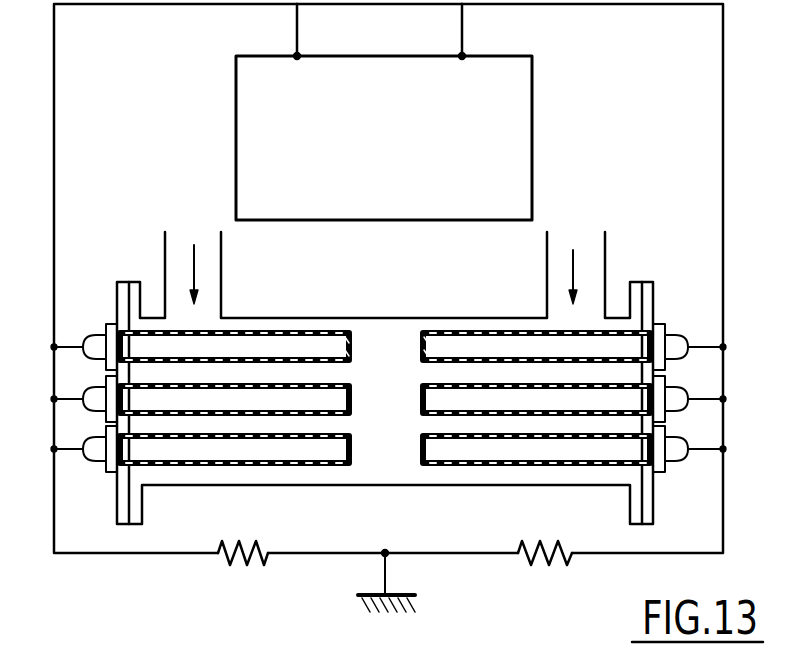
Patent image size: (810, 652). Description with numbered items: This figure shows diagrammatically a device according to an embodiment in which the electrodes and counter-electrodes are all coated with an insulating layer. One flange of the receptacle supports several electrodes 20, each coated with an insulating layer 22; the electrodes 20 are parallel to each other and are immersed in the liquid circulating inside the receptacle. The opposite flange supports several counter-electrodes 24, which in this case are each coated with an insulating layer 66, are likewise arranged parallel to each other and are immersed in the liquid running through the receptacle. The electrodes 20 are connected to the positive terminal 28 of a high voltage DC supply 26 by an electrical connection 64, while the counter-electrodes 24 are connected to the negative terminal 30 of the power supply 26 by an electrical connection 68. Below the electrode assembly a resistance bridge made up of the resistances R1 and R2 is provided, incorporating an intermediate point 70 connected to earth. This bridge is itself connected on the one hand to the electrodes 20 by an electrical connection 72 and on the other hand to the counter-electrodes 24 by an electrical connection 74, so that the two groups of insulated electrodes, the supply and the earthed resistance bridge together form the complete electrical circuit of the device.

The electrode 20 is at (290, 345).
The insulating layer 22 is at (248, 330).
The counter-electrode 24 is at (505, 340).
The high voltage DC supply 26 is at (519, 183).
The positive terminal 28 is at (297, 56).
The negative terminal 30 is at (462, 56).
The electrical connection 64 is at (54, 127).
The insulating layer 66 is at (458, 330).
The electrical connection 68 is at (723, 178).
The intermediate point 70 is at (385, 553).
The electrical connection 72 is at (55, 497).
The electrical connection 74 is at (723, 508).
The resistance R1 is at (244, 536).
The resistance R2 is at (545, 536).